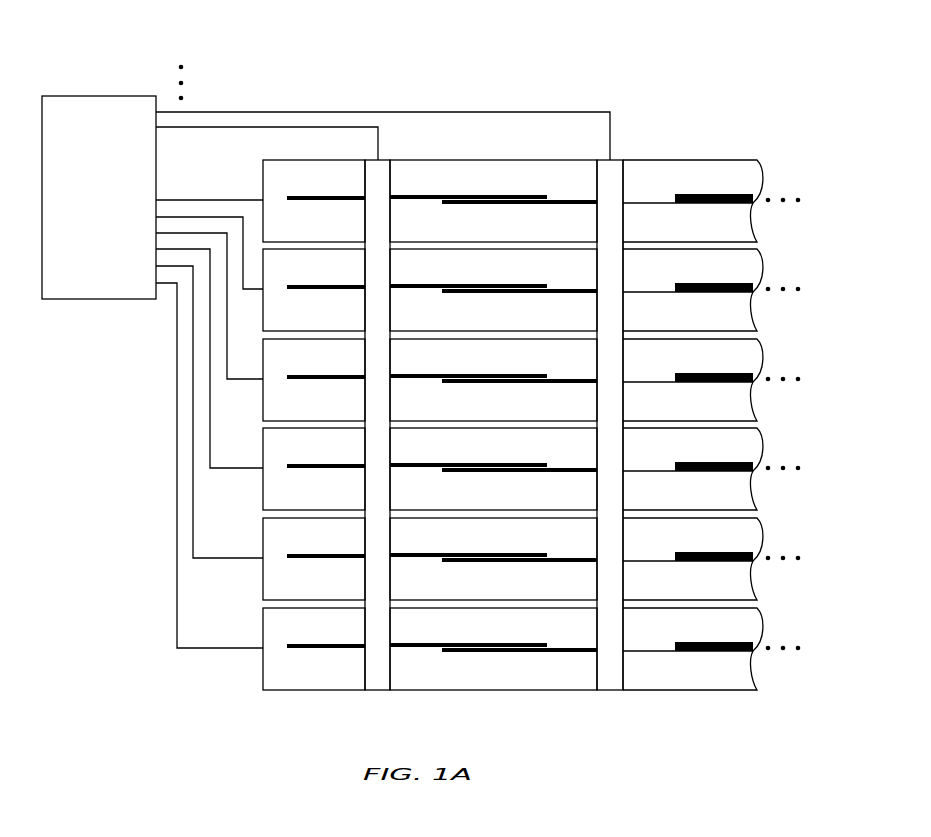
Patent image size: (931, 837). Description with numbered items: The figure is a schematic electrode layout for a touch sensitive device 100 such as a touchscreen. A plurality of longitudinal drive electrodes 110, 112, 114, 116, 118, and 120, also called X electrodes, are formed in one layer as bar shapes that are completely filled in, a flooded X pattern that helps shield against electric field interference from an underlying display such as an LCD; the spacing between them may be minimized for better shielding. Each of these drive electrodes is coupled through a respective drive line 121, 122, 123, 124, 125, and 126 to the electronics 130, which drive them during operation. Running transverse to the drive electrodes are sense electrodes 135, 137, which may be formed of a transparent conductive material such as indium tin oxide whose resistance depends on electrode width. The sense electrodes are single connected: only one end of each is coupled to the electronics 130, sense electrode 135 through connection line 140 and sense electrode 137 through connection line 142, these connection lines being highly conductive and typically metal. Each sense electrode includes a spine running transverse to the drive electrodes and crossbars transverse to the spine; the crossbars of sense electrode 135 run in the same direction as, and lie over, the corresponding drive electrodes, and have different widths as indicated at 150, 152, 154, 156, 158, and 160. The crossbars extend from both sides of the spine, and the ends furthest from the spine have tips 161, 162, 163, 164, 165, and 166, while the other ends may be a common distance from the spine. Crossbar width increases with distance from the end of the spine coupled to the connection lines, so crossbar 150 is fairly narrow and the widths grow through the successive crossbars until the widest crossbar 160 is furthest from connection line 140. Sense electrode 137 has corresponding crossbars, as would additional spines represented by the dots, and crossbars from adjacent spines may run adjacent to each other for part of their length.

The touch sensitive device 100 is at (718, 45).
The drive electrode 110 is at (693, 404).
The drive electrode 112 is at (710, 242).
The drive electrode 114 is at (710, 331).
The drive electrode 116 is at (710, 421).
The drive electrode 118 is at (710, 510).
The drive electrode 120 is at (707, 600).
The drive line 121 is at (208, 200).
The drive line 122 is at (244, 270).
The drive line 123 is at (227, 325).
The drive line 124 is at (211, 418).
The drive line 125 is at (194, 518).
The drive line 126 is at (178, 598).
The electronics 130 is at (98, 94).
The sense electrode 135 is at (380, 160).
The sense electrode 137 is at (617, 160).
The connection line 140 is at (266, 129).
The connection line 142 is at (264, 112).
The crossbar 150 is at (506, 196).
The crossbar 152 is at (506, 285).
The crossbar 154 is at (506, 375).
The crossbar 156 is at (506, 464).
The crossbar 158 is at (506, 554).
The crossbar 160 is at (506, 644).
The crossbar tip 161 is at (549, 201).
The crossbar tip 162 is at (549, 290).
The crossbar tip 163 is at (549, 380).
The crossbar tip 164 is at (549, 469).
The crossbar tip 165 is at (549, 559).
The crossbar tip 166 is at (549, 649).